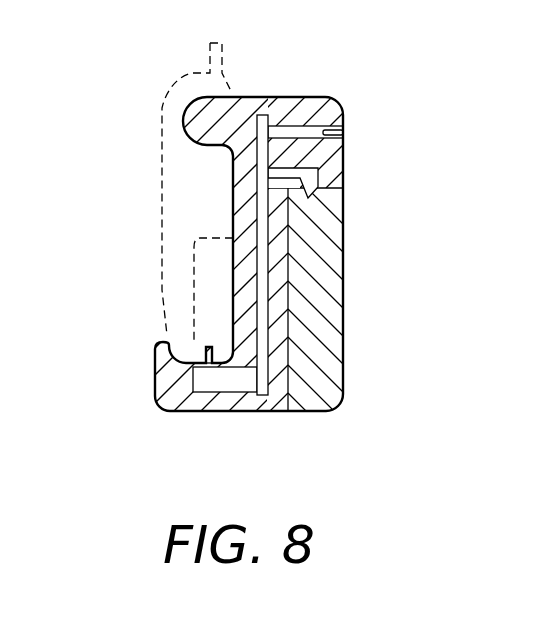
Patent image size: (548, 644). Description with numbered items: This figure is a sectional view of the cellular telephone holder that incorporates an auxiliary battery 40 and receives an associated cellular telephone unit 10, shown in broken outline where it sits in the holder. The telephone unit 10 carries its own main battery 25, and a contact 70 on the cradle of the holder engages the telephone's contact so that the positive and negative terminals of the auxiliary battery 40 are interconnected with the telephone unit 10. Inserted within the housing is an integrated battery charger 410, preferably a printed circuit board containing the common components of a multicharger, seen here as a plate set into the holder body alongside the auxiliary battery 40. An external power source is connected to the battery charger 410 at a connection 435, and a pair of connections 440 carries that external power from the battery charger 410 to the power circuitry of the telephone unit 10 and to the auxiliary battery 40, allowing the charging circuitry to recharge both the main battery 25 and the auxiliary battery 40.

The cellular telephone unit 10 is at (173, 145).
The battery 25 is at (203, 280).
The auxiliary battery 40 is at (320, 382).
The contact 70 is at (207, 343).
The battery charger 410 is at (265, 245).
The connection 435 is at (343, 133).
The connections 440 is at (318, 183).